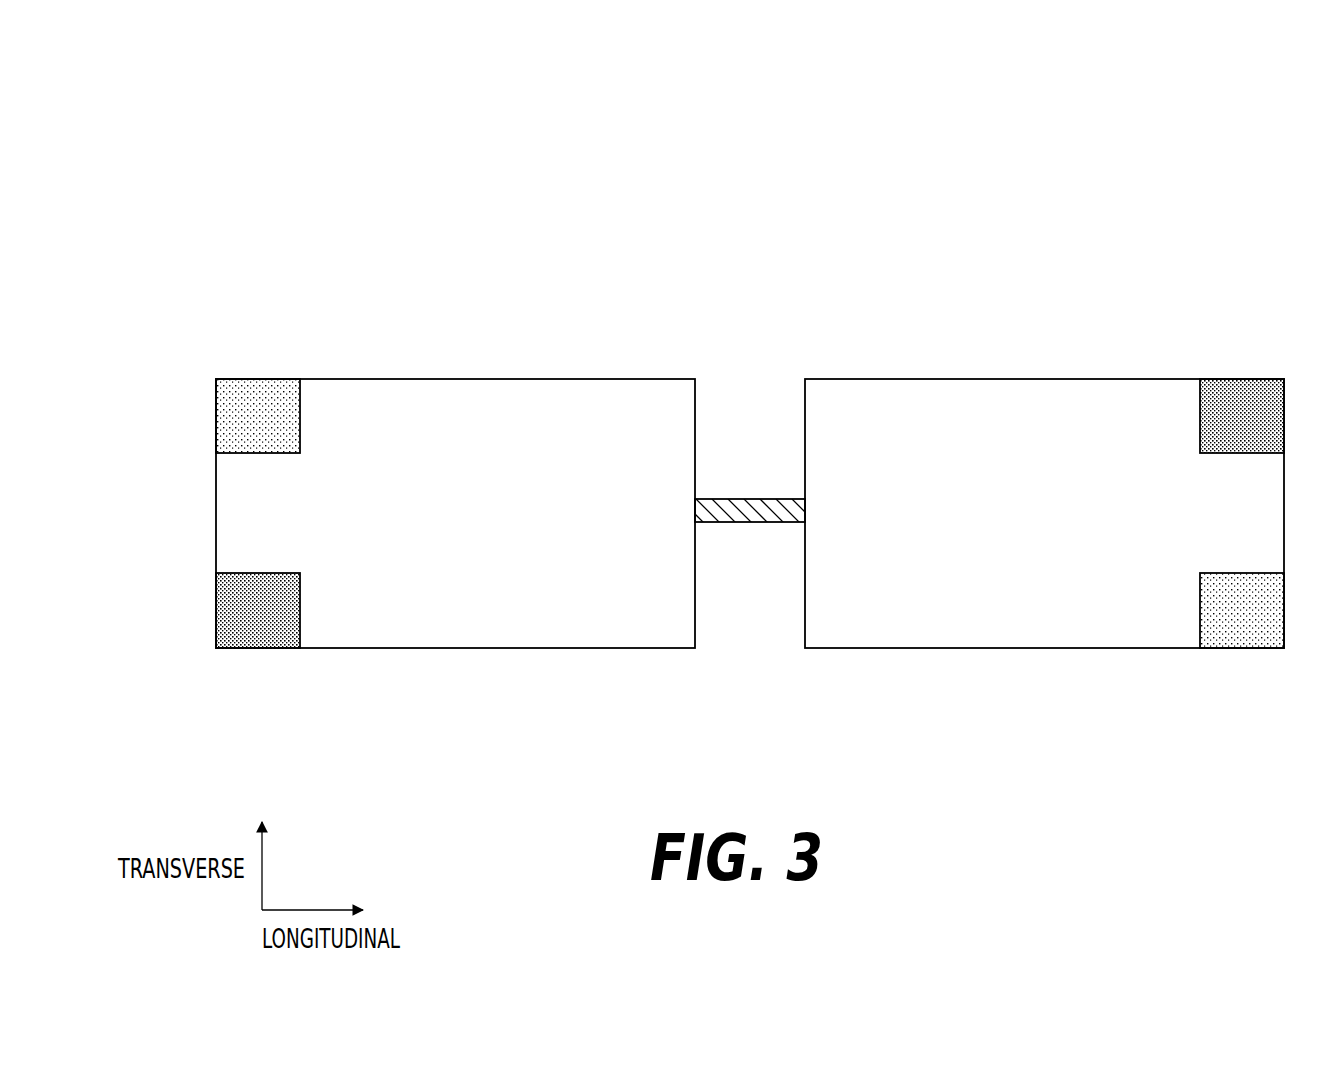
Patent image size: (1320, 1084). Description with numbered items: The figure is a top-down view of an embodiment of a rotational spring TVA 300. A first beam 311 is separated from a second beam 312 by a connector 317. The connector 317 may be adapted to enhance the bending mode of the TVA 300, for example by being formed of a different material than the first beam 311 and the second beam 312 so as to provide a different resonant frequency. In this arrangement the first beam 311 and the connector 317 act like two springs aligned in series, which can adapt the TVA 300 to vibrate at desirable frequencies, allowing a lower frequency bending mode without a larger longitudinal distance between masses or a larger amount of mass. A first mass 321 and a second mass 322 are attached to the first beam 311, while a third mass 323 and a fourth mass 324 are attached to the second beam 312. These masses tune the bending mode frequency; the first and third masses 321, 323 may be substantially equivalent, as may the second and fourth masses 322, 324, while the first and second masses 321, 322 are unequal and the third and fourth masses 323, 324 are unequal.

The rotational spring TVA 300 is at (250, 158).
The first beam 311 is at (483, 414).
The second beam 312 is at (1005, 414).
The connector 317 is at (767, 498).
The first mass 321 is at (260, 413).
The second mass 322 is at (243, 625).
The third mass 323 is at (1245, 625).
The fourth mass 324 is at (1248, 413).